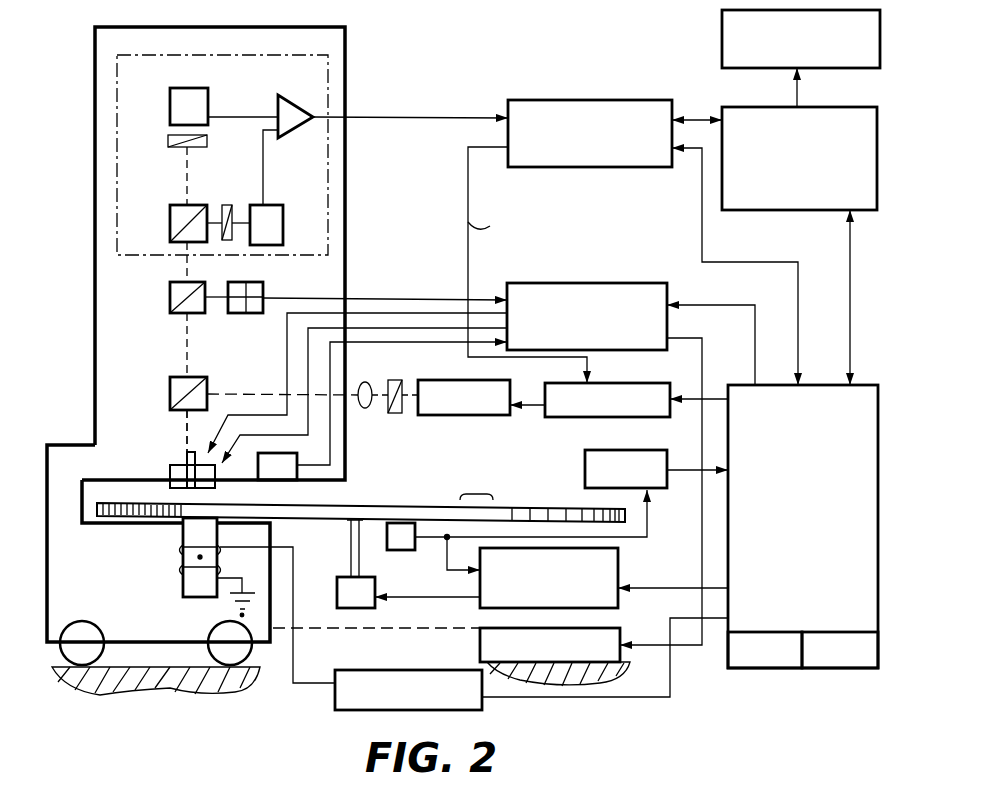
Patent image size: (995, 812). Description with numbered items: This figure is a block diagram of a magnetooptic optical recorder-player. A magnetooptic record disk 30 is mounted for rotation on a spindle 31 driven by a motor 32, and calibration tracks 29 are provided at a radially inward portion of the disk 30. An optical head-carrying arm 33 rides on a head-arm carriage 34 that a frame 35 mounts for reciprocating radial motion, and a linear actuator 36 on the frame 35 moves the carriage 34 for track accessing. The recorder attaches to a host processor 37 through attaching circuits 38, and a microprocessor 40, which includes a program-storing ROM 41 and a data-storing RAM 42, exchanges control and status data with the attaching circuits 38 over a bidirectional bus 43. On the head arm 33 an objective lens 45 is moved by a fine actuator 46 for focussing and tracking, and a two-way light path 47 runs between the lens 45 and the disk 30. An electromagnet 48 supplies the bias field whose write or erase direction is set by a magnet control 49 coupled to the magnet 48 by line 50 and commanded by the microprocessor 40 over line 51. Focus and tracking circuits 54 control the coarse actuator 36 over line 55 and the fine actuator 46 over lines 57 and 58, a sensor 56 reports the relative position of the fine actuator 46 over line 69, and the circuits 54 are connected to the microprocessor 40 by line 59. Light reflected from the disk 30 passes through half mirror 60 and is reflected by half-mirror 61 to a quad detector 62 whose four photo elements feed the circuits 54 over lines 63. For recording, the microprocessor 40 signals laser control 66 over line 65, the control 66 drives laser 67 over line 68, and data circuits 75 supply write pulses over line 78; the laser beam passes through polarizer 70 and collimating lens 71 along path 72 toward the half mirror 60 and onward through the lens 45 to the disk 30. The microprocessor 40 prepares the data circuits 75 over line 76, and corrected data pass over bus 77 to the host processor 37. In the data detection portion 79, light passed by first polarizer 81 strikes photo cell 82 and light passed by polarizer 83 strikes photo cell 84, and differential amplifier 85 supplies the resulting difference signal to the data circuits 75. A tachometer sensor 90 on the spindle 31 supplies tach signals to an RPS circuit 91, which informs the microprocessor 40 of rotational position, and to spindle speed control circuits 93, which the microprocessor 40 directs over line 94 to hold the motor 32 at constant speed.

The calibration tracks 29 is at (476, 485).
The magnetooptic record disk 30 is at (438, 505).
The spindle 31 is at (349, 534).
The motor 32 is at (337, 590).
The optical head-carrying arm 33 is at (95, 200).
The head-arm carriage 34 is at (258, 652).
The frame 35 is at (155, 667).
The linear actuator 36 is at (482, 628).
The host processor 37 is at (722, 25).
The attaching circuits 38 is at (830, 107).
The microprocessor 40 is at (740, 385).
The read-only memory (ROM) 41 is at (828, 668).
The random-access memory (RAM) 42 is at (762, 668).
The bidirectional bus 43 is at (850, 235).
The objective lens 45 is at (185, 458).
The fine actuator 46 is at (172, 478).
The two-way light path 47 is at (187, 430).
The magnet 48 is at (183, 550).
The magnet control 49 is at (410, 670).
The line 50 is at (300, 646).
The line 51 is at (670, 680).
The focus and tracking circuits 54 is at (655, 283).
The line 55 is at (693, 338).
The sensor 56 is at (298, 482).
The line 57 is at (393, 313).
The line 58 is at (418, 328).
The connection line 59 is at (728, 305).
The half mirror 60 is at (181, 377).
The half-mirror 61 is at (170, 300).
The quad detector 62 is at (248, 314).
The lines 63 is at (290, 298).
The line 65 is at (692, 400).
The laser control 66 is at (635, 383).
The laser 67 is at (448, 415).
The line 68 is at (532, 406).
The line 69 is at (375, 342).
The polarizer 70 is at (395, 413).
The collimating lens 71 is at (365, 408).
The light beam 72 is at (258, 393).
The data circuits 75 is at (643, 100).
The line 76 is at (702, 195).
The bus 77 is at (705, 119).
The line 78 is at (468, 185).
The data detection portion 79 is at (258, 55).
The first polarizer 81 is at (226, 205).
The photo cell 82 is at (276, 205).
The polarizer 83 is at (175, 148).
The photo cell 84 is at (194, 88).
The differential amplifier 85 is at (282, 96).
The tachometer sensor 90 is at (400, 550).
The rotational position sensing (RPS) circuit 91 is at (586, 455).
The spindle speed control circuits 93 is at (620, 560).
The line 94 is at (665, 590).